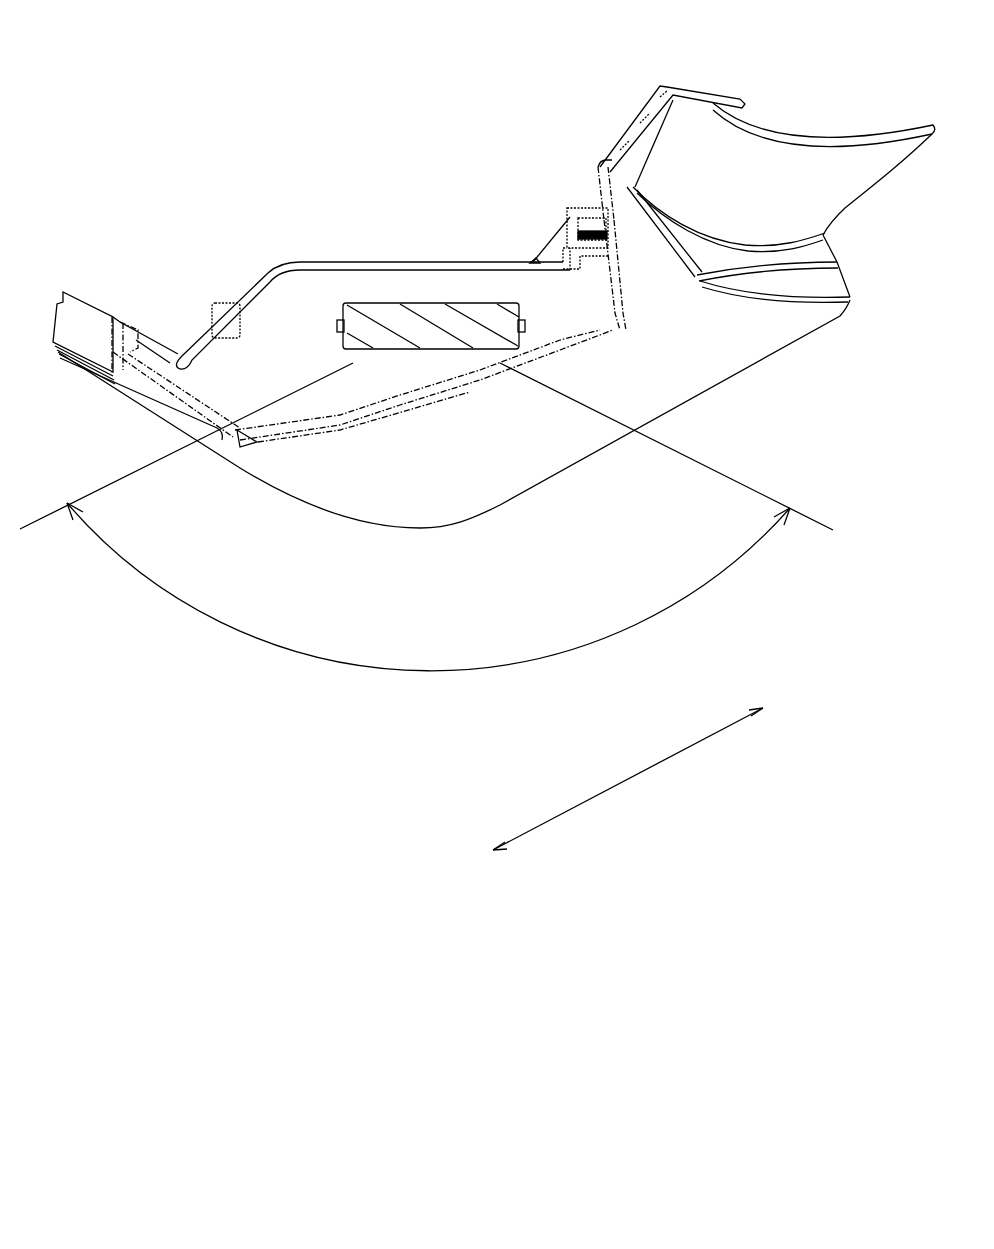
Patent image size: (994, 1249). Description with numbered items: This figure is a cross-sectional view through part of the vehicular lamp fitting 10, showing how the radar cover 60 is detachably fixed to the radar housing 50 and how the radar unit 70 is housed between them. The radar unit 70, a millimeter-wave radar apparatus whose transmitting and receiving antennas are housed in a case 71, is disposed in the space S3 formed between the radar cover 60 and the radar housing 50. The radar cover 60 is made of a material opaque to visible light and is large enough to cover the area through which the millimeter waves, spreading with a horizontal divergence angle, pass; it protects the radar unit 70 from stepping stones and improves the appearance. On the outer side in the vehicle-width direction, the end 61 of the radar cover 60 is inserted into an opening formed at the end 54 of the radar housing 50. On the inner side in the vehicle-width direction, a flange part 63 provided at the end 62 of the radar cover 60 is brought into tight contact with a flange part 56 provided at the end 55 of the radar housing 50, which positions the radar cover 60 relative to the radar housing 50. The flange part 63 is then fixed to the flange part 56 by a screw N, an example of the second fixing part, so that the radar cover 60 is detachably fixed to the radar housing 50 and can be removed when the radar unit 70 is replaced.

The vehicular lamp fitting 10 is at (424, 78).
The radar housing 50 is at (424, 262).
The end of the radar housing on the outer side in the vehicle-width direction 54 is at (130, 338).
The end of the radar housing on the inner side in the vehicle-width direction 55 is at (600, 297).
The flange part 56 is at (633, 131).
The radar cover 60 is at (420, 530).
The end of the radar cover on the outer side in the vehicle-width direction 61 is at (77, 373).
The end of the radar cover on the inner side in the vehicle-width direction 62 is at (838, 287).
The flange part 63 is at (603, 167).
The radar unit 70 is at (386, 346).
The case 71 is at (448, 346).
The screw N is at (608, 236).
The space S3 is at (292, 352).